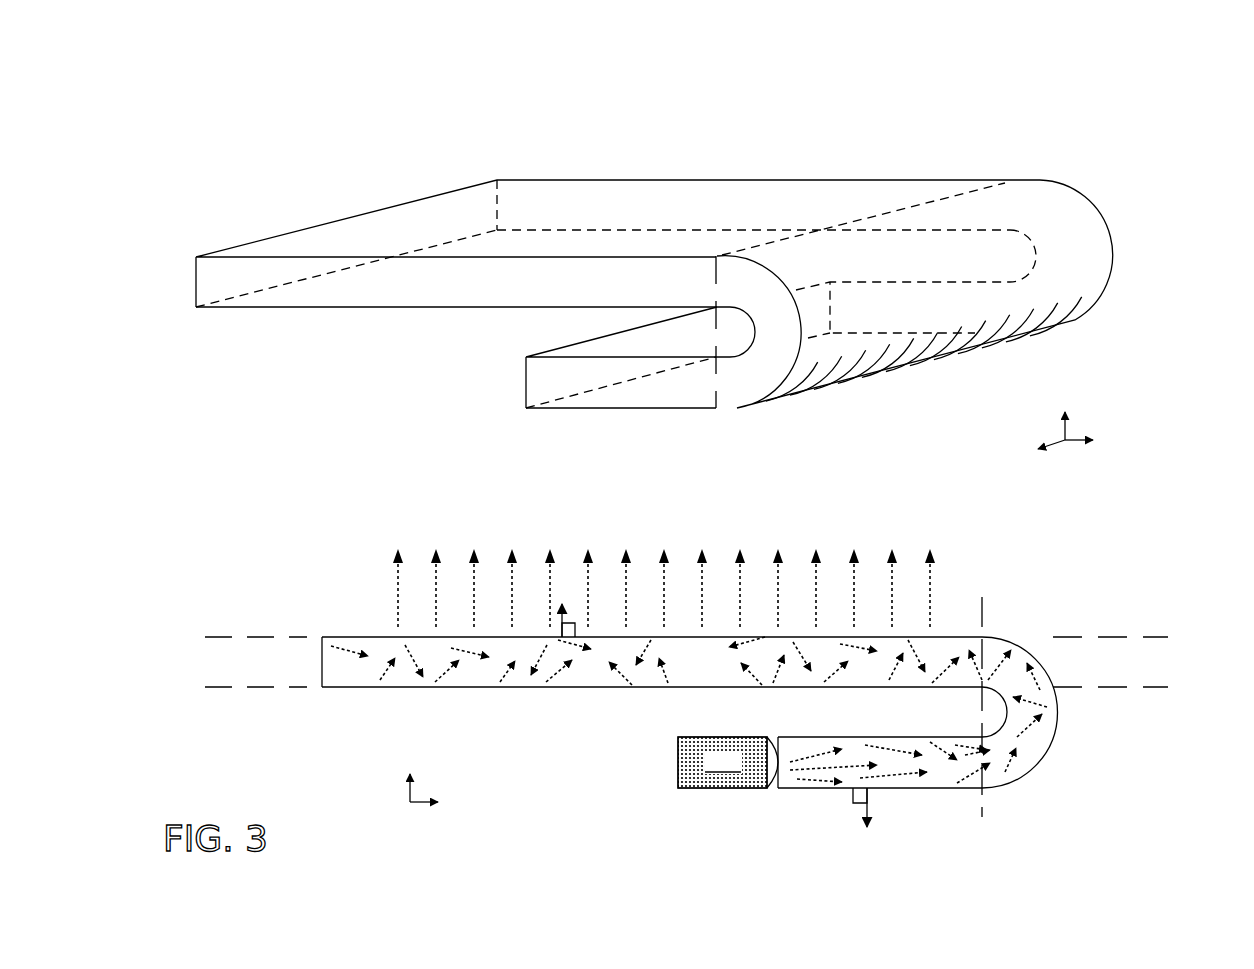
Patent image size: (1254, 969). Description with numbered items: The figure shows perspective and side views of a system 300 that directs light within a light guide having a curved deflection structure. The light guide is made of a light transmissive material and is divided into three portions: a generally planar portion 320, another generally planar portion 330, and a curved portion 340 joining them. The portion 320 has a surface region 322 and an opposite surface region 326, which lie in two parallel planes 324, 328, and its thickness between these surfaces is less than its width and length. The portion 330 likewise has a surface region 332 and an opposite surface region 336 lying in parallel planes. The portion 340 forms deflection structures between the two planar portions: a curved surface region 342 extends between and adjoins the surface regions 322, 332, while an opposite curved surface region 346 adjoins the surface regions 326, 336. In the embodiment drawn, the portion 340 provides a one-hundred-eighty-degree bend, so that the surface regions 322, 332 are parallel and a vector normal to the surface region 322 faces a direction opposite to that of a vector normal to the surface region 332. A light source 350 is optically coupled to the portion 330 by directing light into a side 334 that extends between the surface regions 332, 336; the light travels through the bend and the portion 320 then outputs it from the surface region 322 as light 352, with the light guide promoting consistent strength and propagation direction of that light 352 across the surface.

The system 300 is at (1222, 598).
The portion 320 is at (498, 166).
The surface region 322 is at (348, 628).
The plane 324 is at (242, 628).
The surface region 326 is at (348, 696).
The plane 328 is at (242, 696).
The portion 330 is at (716, 422).
The surface region 332 is at (805, 796).
The side 334 is at (518, 378).
The surface region 336 is at (792, 731).
The portion 340 is at (718, 420).
The surface region 342 is at (1058, 669).
The surface region 346 is at (1002, 712).
The light source 350 is at (705, 772).
The light 352 is at (667, 603).